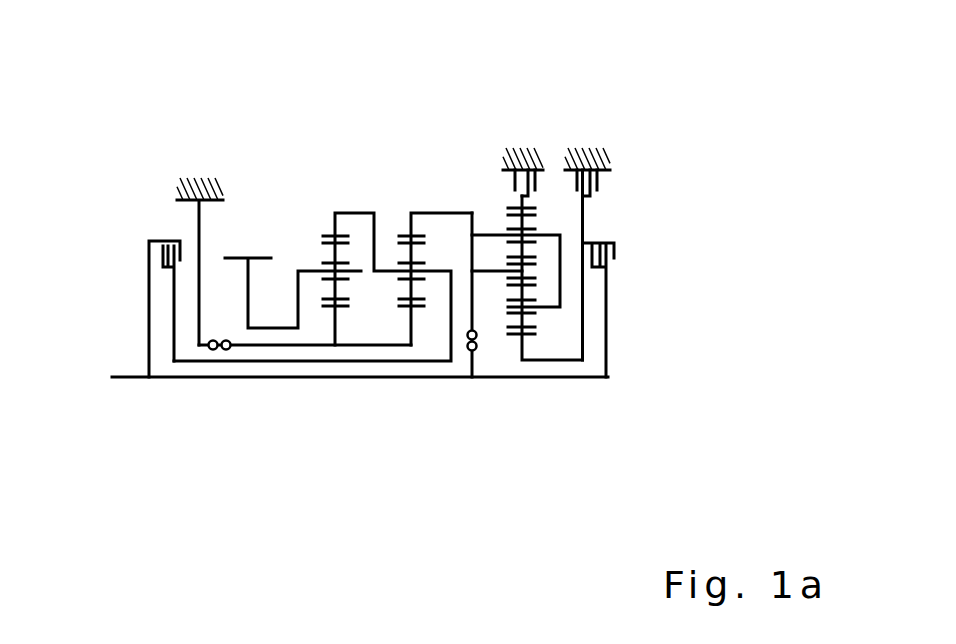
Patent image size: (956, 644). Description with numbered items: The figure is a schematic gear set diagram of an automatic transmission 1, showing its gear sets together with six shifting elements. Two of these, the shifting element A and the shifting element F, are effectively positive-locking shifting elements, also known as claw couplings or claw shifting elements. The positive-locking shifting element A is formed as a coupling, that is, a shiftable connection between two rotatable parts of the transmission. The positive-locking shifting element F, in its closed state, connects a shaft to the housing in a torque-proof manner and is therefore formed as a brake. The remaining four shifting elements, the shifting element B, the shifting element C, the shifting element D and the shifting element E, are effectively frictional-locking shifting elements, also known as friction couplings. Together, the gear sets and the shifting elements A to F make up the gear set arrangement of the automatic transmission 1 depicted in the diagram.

The automatic transmission 1 is at (256, 153).
The shifting element E is at (158, 257).
The shifting element F is at (219, 352).
The shifting element A is at (470, 352).
The shifting element D is at (540, 188).
The shifting element C is at (600, 185).
The shifting element B is at (615, 257).